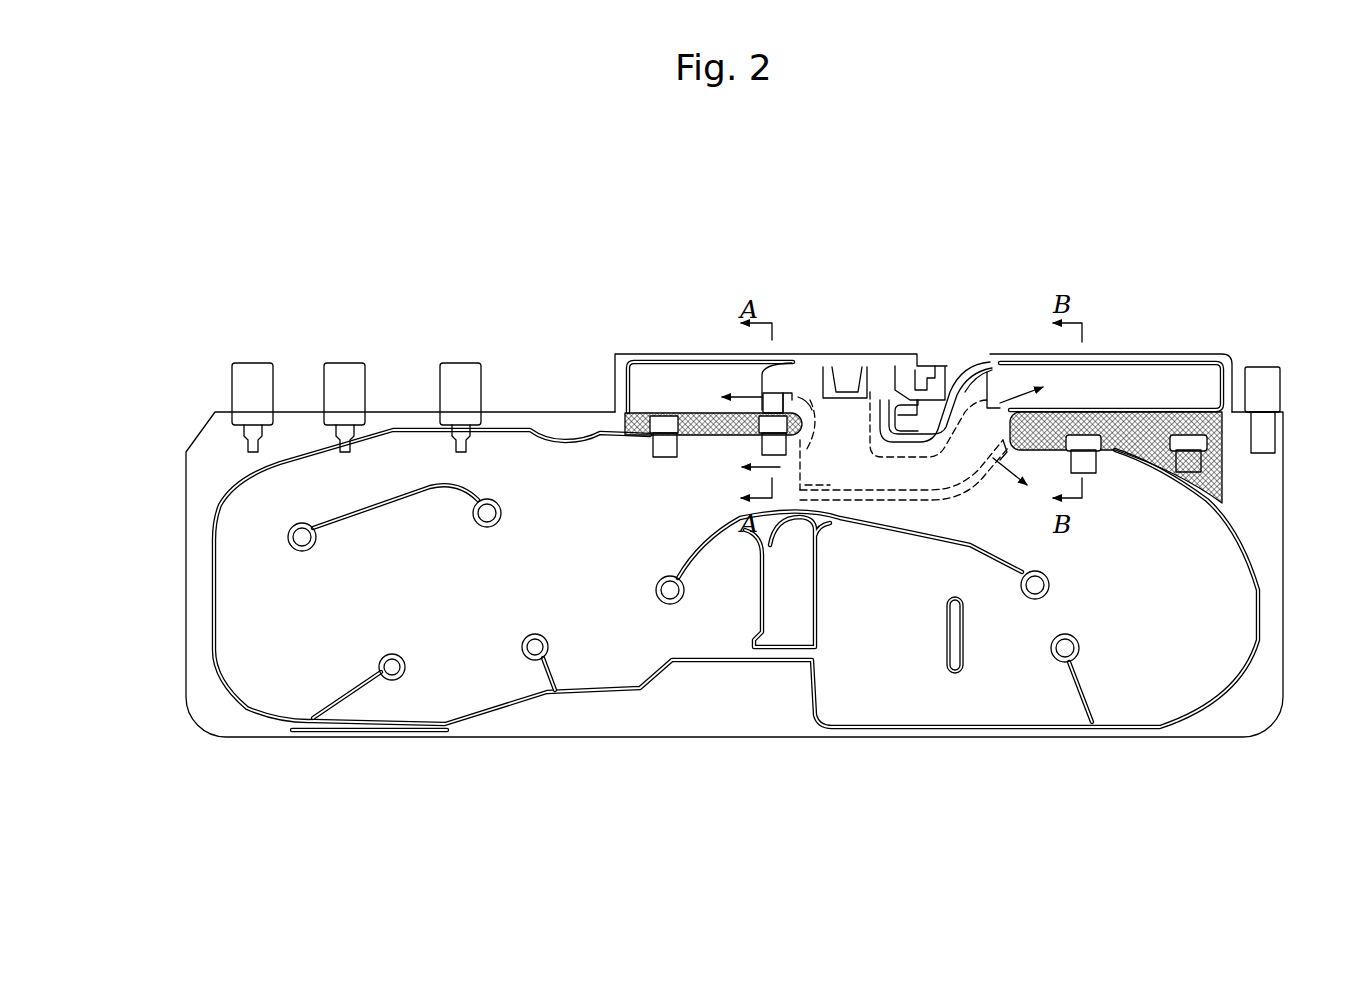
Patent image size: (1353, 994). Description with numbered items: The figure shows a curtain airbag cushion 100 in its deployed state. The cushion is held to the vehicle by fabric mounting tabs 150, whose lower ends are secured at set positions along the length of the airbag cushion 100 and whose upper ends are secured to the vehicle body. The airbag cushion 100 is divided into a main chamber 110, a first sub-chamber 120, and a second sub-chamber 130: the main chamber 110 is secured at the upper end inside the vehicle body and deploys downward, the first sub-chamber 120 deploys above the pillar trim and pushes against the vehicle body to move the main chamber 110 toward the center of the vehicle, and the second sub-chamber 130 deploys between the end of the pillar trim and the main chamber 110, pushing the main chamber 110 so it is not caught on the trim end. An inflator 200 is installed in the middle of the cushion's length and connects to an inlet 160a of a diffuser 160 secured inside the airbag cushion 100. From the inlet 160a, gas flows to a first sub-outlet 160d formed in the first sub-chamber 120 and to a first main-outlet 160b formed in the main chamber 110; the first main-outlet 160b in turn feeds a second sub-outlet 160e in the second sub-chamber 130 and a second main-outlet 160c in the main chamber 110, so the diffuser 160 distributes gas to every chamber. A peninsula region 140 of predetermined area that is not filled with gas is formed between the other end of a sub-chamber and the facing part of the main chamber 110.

The airbag cushion 100 is at (526, 388).
The main chamber 110 is at (604, 623).
The first sub-chamber 120 is at (690, 388).
The second sub-chamber 130 is at (1197, 392).
The peninsula region 140 is at (728, 410).
The mounting tabs 150 is at (660, 412).
The diffuser 160 is at (873, 478).
The inlet 160a is at (898, 365).
The first main-outlet 160b is at (833, 478).
The second main-outlet 160c is at (1005, 500).
The first sub-outlet 160d is at (795, 385).
The second sub-outlet 160e is at (990, 378).
The inflator 200 is at (935, 365).